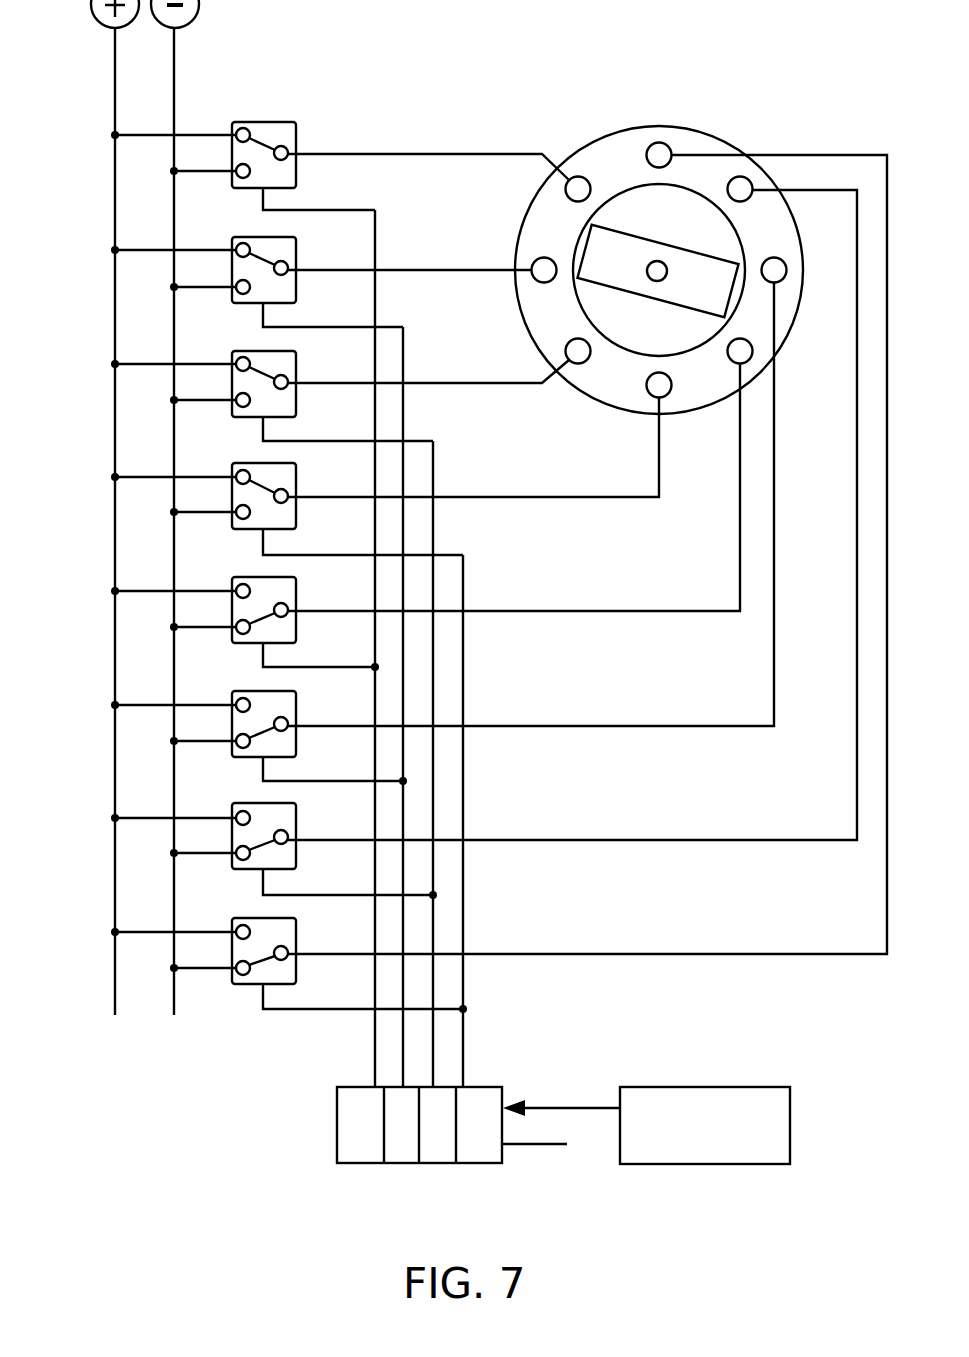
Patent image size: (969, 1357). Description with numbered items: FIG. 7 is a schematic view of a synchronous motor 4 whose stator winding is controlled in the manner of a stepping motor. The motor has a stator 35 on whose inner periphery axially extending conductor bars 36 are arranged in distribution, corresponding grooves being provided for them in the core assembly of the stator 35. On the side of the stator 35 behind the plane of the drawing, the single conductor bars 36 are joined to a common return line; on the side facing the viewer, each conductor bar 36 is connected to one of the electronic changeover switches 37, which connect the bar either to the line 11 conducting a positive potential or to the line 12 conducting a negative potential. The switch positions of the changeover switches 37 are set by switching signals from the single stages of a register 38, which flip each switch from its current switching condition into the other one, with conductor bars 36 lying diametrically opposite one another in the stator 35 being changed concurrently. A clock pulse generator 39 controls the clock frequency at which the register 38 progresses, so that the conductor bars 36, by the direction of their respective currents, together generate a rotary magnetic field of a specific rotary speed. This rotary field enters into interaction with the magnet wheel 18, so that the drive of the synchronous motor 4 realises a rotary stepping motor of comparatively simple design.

The synchronous motor 4 is at (699, 228).
The line conducting a positive potential 11 is at (115, 87).
The line conducting a negative potential 12 is at (174, 74).
The magnet wheel 18 is at (637, 248).
The stator 35 is at (685, 142).
The conductor bars 36 is at (735, 178).
The electronic changeover switches 37 is at (270, 122).
The register 38 is at (482, 1087).
The clock pulse generator 39 is at (740, 1087).